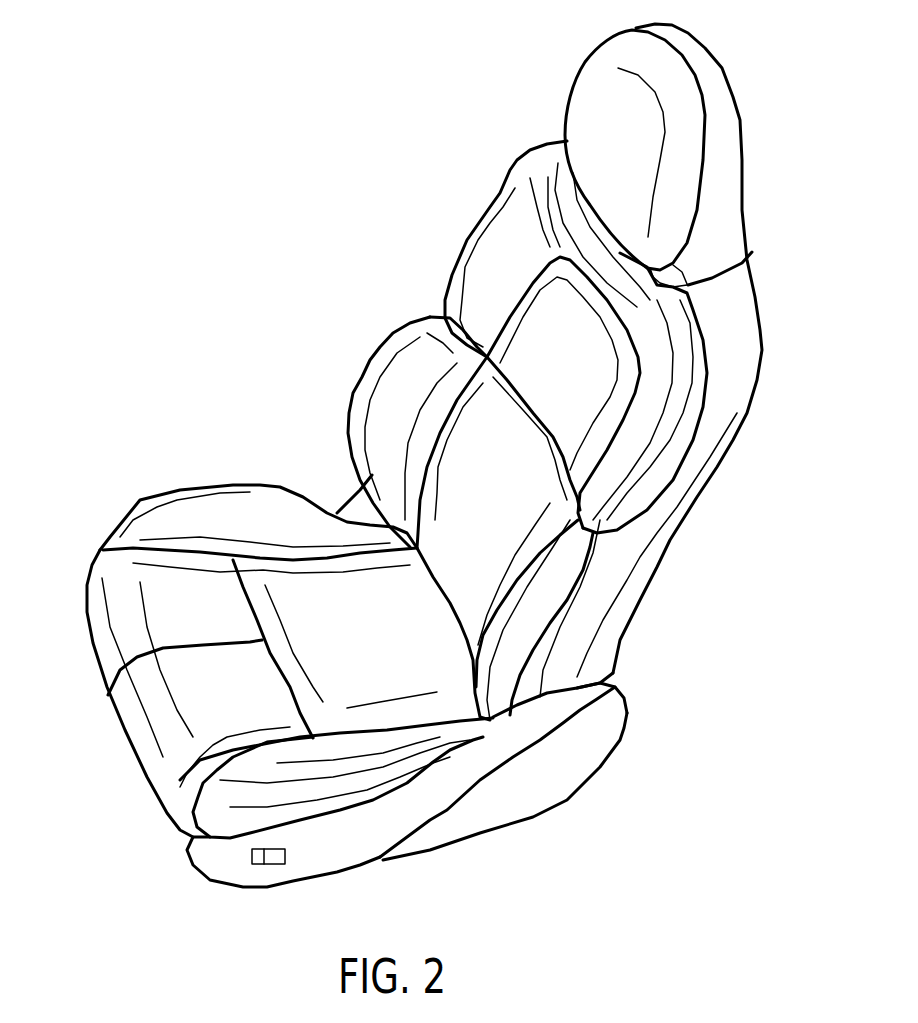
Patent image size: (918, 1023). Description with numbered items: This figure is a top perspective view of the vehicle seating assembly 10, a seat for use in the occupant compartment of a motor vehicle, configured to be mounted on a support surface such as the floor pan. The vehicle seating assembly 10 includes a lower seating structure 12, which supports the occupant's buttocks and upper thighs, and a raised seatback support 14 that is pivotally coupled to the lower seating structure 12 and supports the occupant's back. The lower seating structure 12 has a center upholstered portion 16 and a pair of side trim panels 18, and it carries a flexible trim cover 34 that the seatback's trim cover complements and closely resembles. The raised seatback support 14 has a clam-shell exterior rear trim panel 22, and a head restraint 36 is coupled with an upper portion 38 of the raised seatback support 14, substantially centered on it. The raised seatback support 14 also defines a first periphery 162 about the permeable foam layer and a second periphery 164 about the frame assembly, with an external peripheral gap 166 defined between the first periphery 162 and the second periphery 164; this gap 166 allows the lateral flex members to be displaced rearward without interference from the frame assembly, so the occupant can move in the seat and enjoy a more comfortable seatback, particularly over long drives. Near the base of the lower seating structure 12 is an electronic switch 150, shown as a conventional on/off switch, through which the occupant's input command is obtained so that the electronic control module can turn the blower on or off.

The vehicle seating assembly 10 is at (174, 313).
The lower seating structure 12 is at (220, 808).
The raised seatback support 14 is at (663, 437).
The center upholstered portion 16 is at (373, 687).
The side trim panels 18 is at (537, 777).
The clam-shell exterior rear trim panel 22 is at (620, 620).
The flexible trim cover 34 is at (100, 628).
The head restraint 36 is at (677, 130).
The upper portion 38 is at (727, 297).
The electronic switch 150 is at (273, 864).
The first periphery 162 is at (510, 167).
The second periphery 164 is at (743, 357).
The external peripheral gap 166 is at (610, 562).